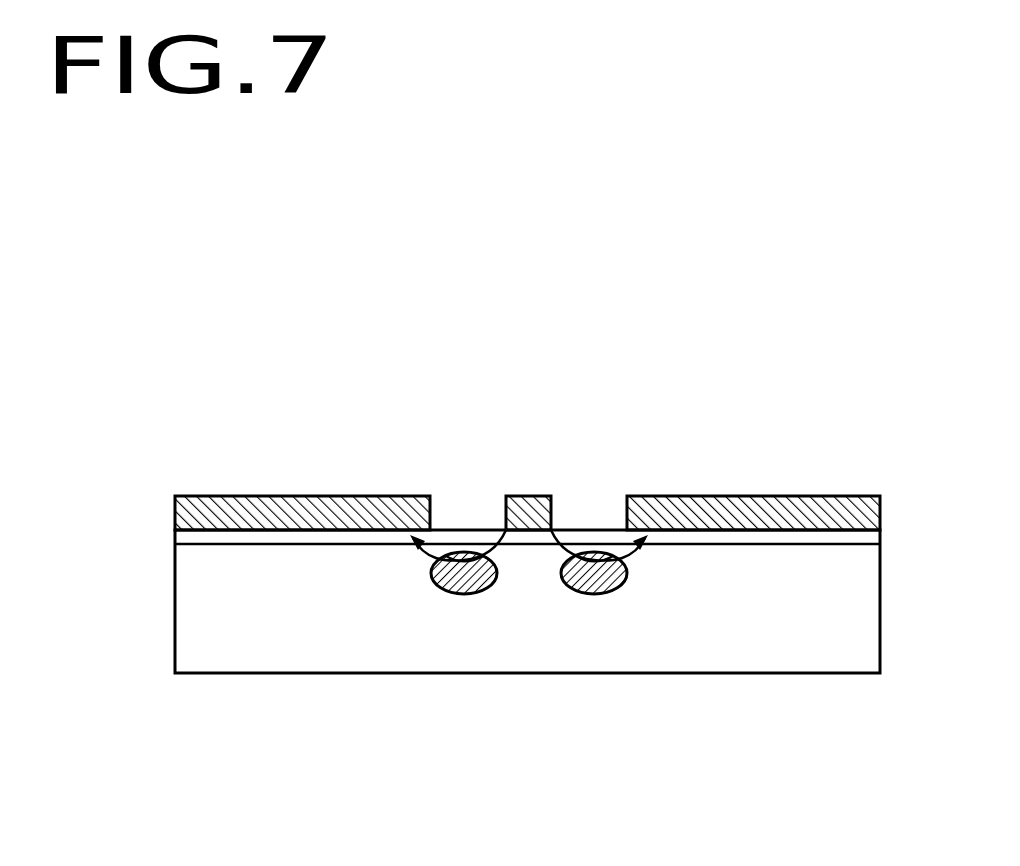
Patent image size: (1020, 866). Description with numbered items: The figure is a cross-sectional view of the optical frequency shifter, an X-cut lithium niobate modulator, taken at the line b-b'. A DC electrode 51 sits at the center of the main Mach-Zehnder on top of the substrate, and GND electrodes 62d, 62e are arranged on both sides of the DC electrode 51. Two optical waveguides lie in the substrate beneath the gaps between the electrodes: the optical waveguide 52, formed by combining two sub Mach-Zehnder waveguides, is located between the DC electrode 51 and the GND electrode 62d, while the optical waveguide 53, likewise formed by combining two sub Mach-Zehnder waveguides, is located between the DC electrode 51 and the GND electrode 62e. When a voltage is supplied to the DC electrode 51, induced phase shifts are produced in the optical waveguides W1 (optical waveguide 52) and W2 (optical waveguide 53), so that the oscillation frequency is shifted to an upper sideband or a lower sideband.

The GND electrode 62e is at (256, 495).
The DC electrode 51 is at (522, 496).
The GND electrode 62d is at (745, 496).
The optical waveguide 53 is at (462, 595).
The optical waveguide 52 is at (588, 595).
The optical waveguide W1 is at (629, 574).
The optical waveguide W2 is at (423, 573).